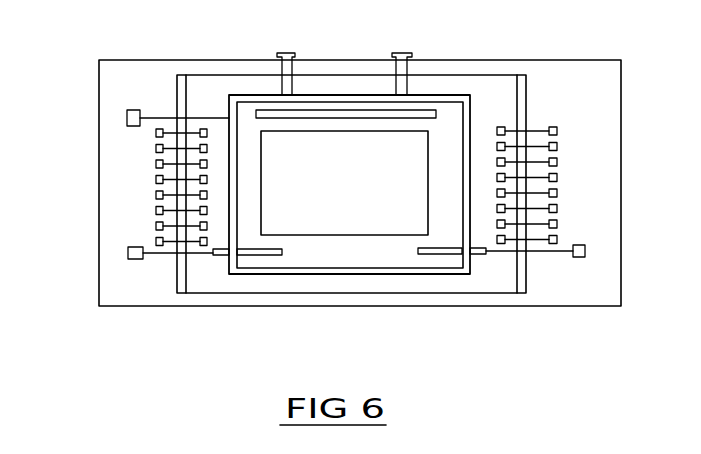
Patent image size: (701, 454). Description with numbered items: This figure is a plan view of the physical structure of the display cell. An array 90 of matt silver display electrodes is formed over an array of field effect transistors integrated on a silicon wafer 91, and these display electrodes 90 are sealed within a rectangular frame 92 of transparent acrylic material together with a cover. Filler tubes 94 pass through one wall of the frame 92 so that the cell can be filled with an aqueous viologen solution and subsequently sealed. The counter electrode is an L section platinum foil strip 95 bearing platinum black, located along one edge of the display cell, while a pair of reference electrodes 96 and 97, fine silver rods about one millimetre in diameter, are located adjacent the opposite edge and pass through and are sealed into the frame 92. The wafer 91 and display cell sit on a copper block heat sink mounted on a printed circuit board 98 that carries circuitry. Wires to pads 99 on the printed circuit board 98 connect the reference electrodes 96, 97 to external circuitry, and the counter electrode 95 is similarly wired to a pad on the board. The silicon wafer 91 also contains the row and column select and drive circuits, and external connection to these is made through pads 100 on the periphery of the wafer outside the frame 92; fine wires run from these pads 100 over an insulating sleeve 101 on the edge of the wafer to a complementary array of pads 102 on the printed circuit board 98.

The array of display electrodes 90 is at (362, 189).
The silicon wafer 91 is at (370, 294).
The rectangular frame 92 is at (302, 275).
The filler tubes 94 is at (294, 53).
The counter electrode 95 is at (438, 115).
The reference electrode 96 is at (252, 256).
The reference electrode 97 is at (447, 255).
The printed circuit board 98 is at (621, 104).
The pads 99 is at (138, 260).
The pads 100 is at (208, 180).
The insulating sleeve 101 is at (177, 88).
The array of pads 102 is at (156, 150).